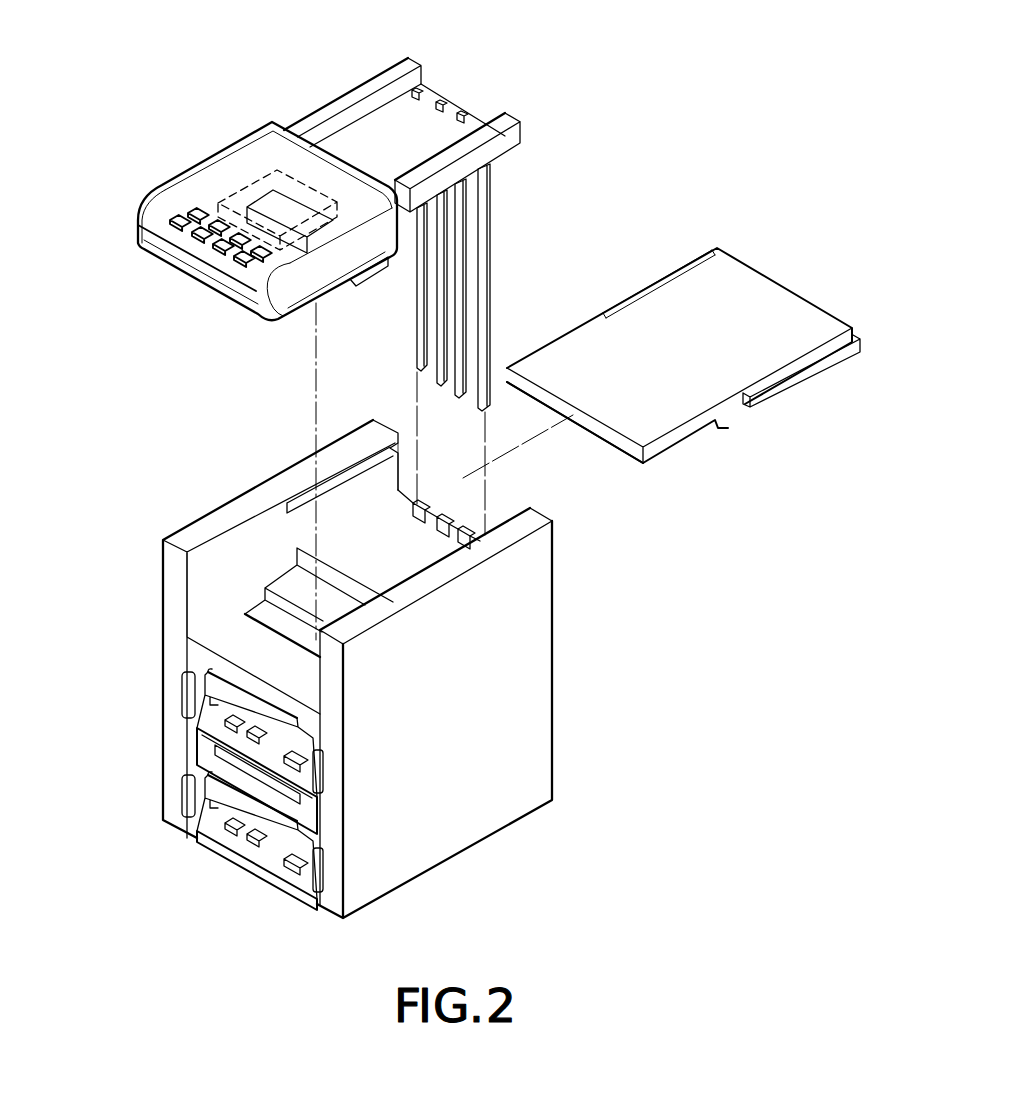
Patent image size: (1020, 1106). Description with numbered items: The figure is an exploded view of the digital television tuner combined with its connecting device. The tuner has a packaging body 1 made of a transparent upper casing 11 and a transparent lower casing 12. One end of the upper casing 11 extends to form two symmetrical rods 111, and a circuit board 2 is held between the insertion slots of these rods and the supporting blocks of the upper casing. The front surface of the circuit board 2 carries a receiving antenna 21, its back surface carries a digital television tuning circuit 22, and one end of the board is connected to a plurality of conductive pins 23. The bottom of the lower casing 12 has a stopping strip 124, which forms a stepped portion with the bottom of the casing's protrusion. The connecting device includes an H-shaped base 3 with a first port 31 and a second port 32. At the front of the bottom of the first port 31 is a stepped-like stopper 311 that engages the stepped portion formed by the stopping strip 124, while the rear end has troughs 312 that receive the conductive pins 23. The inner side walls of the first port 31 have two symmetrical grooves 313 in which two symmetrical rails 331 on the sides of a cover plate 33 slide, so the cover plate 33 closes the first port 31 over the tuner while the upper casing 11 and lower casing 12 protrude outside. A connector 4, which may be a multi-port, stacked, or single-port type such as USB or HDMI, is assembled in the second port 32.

The packaging body 1 is at (221, 225).
The upper casing 11 is at (156, 210).
The rods 111 is at (336, 100).
The lower casing 12 is at (198, 278).
The stopping strip 124 is at (338, 287).
The circuit board 2 is at (438, 207).
The receiving antenna 21 is at (182, 250).
The digital television tuning circuit 22 is at (276, 170).
The conductive pins 23 is at (492, 245).
The base 3 is at (348, 644).
The first port 31 is at (197, 613).
The stopper 311 is at (290, 580).
The troughs 312 is at (420, 500).
The grooves 313 is at (370, 452).
The second port 32 is at (190, 746).
The cover plate 33 is at (697, 338).
The rails 331 is at (795, 383).
The connector 4 is at (241, 868).